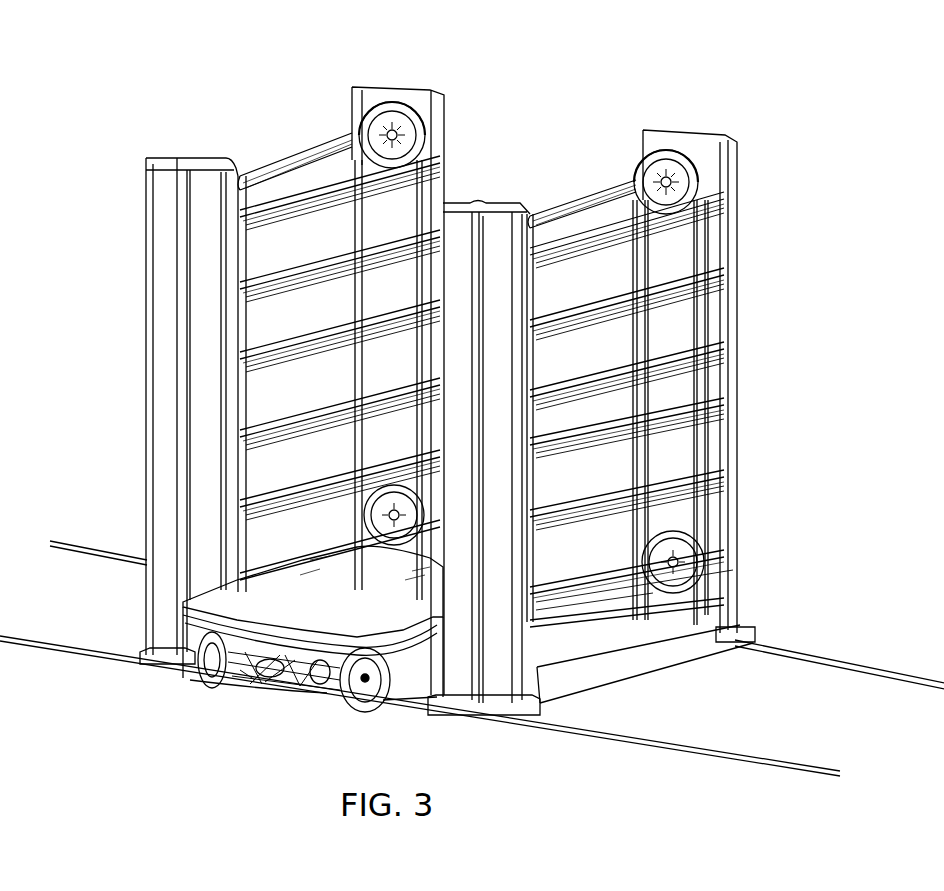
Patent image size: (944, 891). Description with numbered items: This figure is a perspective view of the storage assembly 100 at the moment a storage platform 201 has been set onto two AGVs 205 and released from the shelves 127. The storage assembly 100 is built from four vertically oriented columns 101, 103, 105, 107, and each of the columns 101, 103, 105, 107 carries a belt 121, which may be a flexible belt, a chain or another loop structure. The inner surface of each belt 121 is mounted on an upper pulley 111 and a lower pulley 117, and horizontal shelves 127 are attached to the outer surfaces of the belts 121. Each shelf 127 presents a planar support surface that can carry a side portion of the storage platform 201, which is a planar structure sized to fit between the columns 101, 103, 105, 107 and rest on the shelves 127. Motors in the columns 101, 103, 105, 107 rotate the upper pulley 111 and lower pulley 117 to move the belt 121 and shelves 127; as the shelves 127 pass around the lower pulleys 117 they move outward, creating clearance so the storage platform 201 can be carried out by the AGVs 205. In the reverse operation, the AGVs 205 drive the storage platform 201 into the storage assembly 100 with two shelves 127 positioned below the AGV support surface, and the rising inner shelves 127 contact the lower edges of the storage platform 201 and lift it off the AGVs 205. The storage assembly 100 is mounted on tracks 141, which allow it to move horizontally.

The storage assembly 100 is at (275, 72).
The column 101 is at (707, 138).
The column 103 is at (498, 688).
The column 105 is at (383, 88).
The column 107 is at (157, 158).
The upper pulley 111 is at (373, 130).
The lower pulley 117 is at (688, 578).
The belt 121 is at (425, 178).
The shelf 127 is at (273, 157).
The track 141 is at (778, 658).
The storage platform 201 is at (368, 620).
The AGV 205 is at (263, 677).